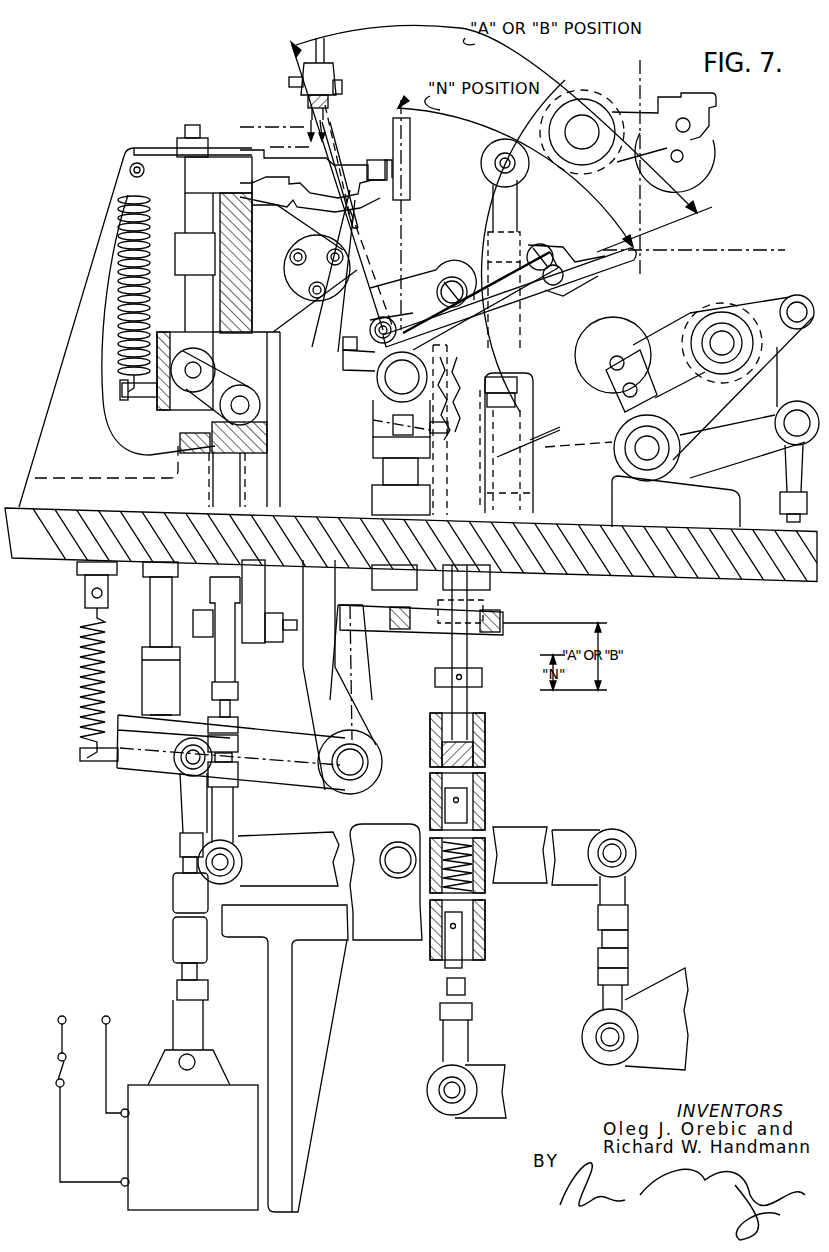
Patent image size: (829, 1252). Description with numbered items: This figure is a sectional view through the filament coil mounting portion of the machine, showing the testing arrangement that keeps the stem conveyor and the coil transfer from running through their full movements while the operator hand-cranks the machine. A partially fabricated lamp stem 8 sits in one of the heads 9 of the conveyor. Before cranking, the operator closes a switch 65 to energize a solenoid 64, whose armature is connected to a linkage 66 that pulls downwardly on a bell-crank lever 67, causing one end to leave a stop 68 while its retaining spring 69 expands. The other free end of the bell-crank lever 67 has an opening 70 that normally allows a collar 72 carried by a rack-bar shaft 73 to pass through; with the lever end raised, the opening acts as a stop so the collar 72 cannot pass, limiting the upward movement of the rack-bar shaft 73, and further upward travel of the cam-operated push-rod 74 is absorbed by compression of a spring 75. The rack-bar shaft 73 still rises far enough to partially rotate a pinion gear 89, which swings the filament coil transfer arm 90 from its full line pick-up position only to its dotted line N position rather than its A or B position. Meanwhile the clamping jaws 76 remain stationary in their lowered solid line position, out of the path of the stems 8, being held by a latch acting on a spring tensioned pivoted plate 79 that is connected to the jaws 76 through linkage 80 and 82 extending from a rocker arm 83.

The lamp stem 8 is at (302, 92).
The heads 9 is at (335, 86).
The clamping jaws 76 is at (372, 150).
The filament coil transfer arm 90 is at (412, 163).
The pinion gear 89 is at (360, 402).
The opening 70 is at (474, 612).
The rack-bar shaft 73 is at (452, 652).
The collar 72 is at (483, 682).
The retaining spring 69 is at (82, 668).
The stop 68 is at (142, 692).
The linkage 82 is at (215, 757).
The bell-crank lever 67 is at (268, 790).
The rocker arm 83 is at (327, 835).
The linkage 66 is at (173, 893).
The spring 75 is at (485, 882).
The linkage 80 is at (630, 958).
The cam-operated push-rod 74 is at (470, 1040).
The spring tensioned pivoted plate 79 is at (633, 1068).
The switch 65 is at (58, 1068).
The solenoid 64 is at (135, 1145).